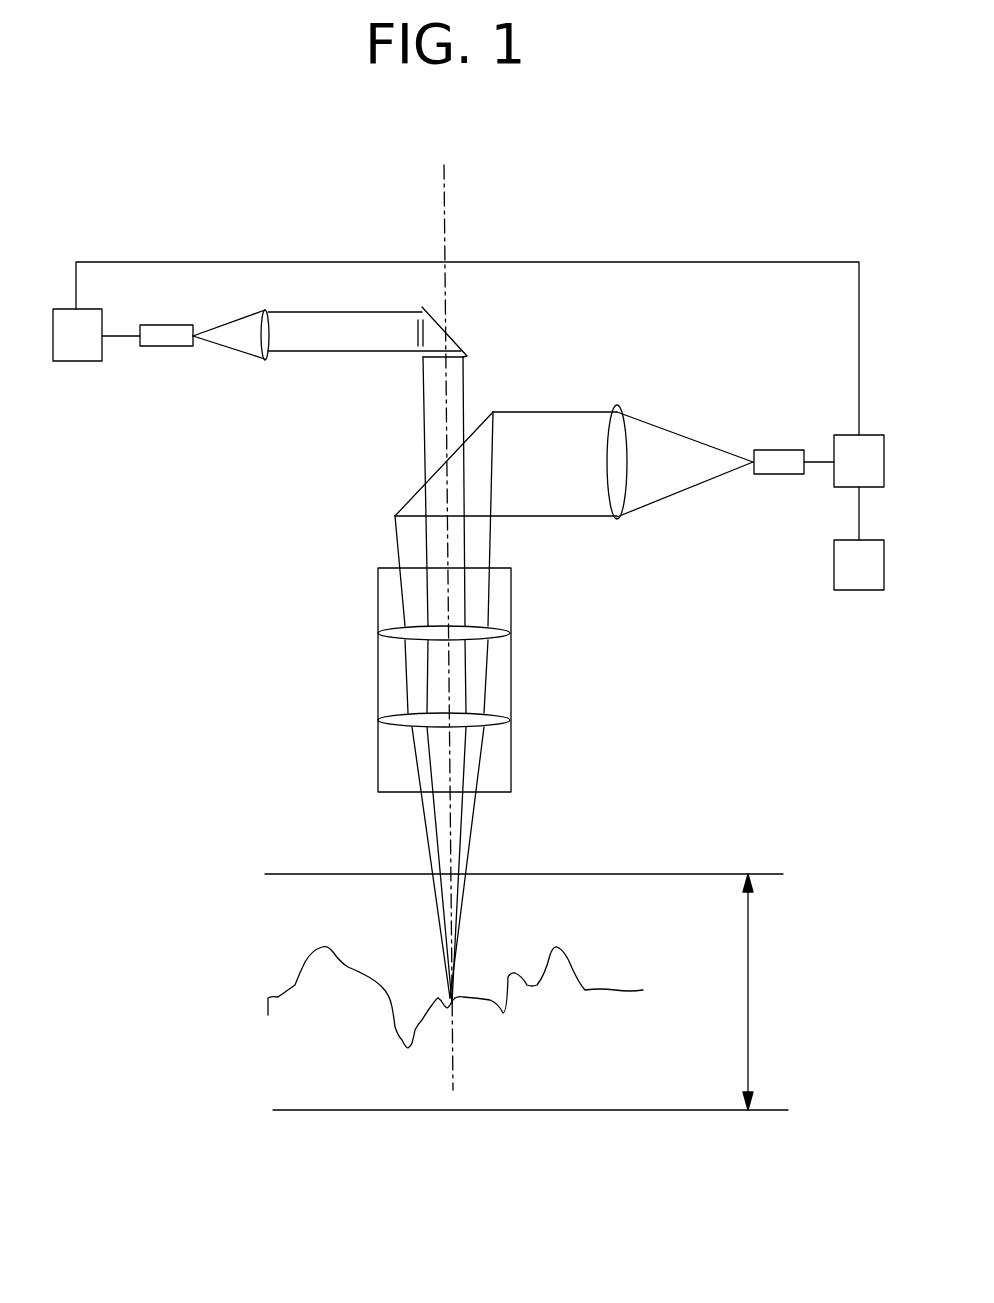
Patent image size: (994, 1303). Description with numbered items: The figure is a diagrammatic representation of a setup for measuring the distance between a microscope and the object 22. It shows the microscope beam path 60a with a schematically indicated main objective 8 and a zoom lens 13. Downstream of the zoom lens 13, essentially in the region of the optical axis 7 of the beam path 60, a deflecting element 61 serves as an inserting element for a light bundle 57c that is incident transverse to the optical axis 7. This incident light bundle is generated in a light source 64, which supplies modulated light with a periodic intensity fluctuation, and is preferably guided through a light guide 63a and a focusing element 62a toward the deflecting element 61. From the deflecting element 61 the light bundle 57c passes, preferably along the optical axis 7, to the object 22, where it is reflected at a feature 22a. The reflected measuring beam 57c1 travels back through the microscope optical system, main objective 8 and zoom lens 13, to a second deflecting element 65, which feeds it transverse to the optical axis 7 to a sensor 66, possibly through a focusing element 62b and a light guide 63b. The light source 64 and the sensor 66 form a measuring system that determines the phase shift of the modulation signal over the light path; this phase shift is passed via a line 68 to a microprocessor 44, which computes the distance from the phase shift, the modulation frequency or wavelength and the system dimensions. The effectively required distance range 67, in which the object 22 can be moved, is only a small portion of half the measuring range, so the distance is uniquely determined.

The light source 64 is at (60, 361).
The light guide 63a is at (153, 346).
The focusing element 62a is at (265, 359).
The light bundle 57c is at (313, 351).
The deflecting element 61 is at (448, 333).
The beam path 60 is at (447, 378).
The second deflecting element 65 is at (417, 490).
The focusing element 62b is at (617, 405).
The light guide 63b is at (775, 450).
The sensor 66 is at (833, 475).
The line 68 is at (858, 517).
The microprocessor 44 is at (835, 577).
The microscope beam path 60a is at (511, 680).
The zoom lens 13 is at (511, 633).
The main objective 8 is at (511, 720).
The measuring beam 57c1 is at (473, 837).
The optical axis 7 is at (450, 829).
The object 22 is at (586, 992).
The feature 22a is at (447, 1003).
The distance range 67 is at (748, 973).